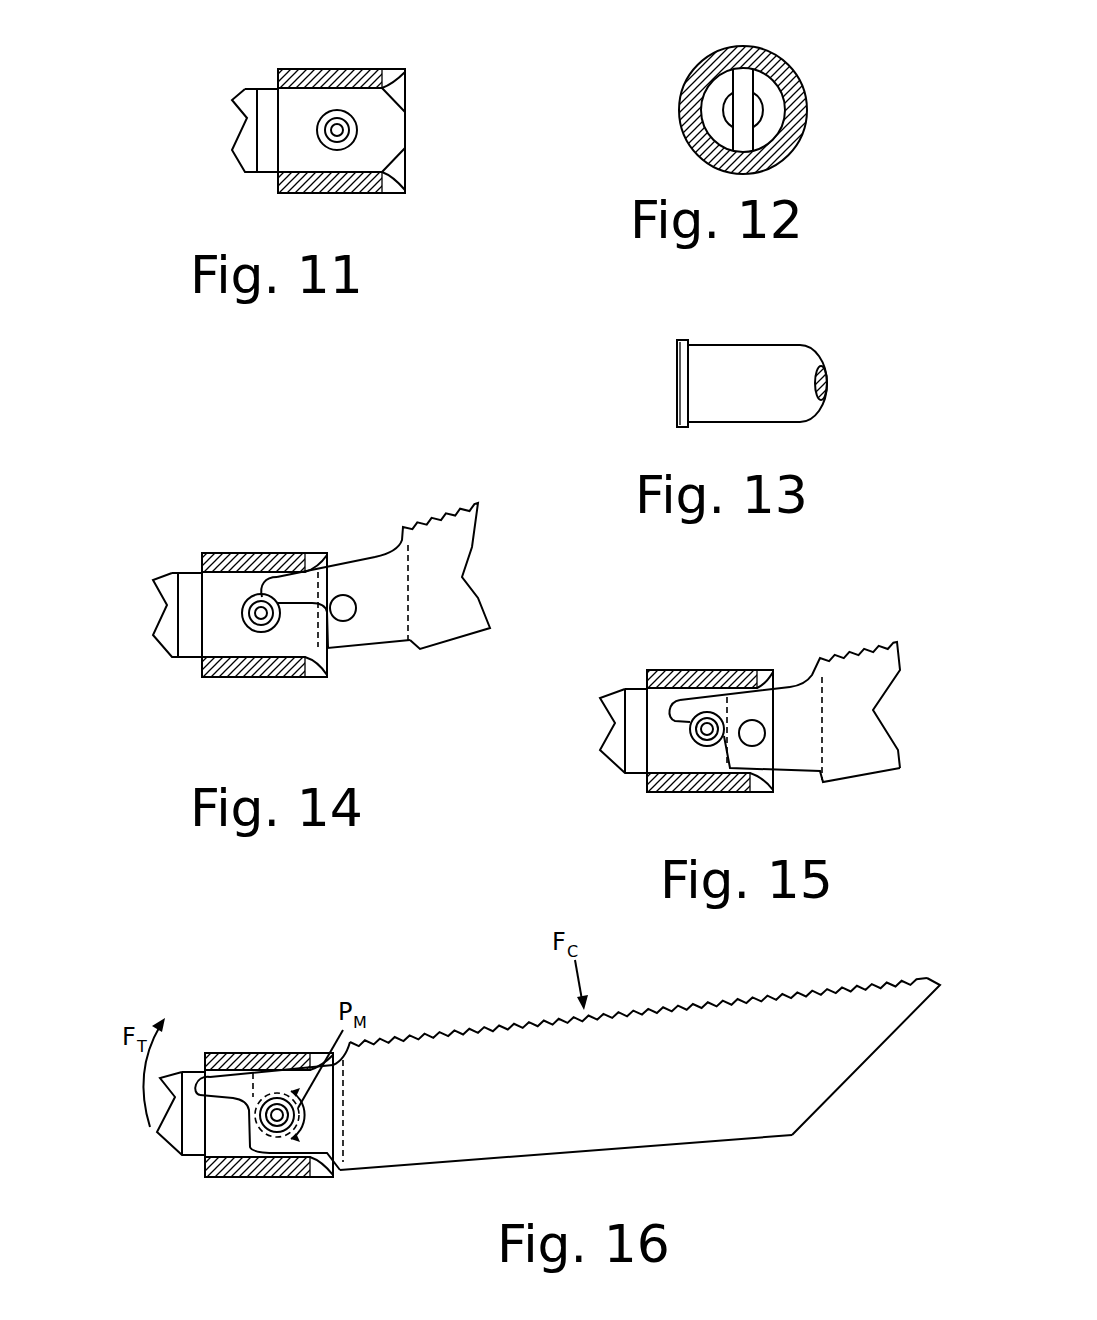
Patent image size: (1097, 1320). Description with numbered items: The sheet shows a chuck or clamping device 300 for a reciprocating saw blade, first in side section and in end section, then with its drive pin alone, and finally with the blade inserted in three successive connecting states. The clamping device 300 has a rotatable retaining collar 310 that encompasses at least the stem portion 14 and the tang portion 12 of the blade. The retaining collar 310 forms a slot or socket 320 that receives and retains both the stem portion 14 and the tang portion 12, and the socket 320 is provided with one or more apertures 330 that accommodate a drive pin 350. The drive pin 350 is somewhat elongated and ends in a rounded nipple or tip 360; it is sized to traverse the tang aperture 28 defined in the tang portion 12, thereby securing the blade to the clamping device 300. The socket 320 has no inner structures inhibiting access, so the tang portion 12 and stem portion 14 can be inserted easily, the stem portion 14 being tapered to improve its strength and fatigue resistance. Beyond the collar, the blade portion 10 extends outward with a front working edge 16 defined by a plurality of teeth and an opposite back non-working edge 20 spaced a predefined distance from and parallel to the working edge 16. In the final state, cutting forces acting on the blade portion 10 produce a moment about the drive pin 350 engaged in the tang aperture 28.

In FIG. 11, the clamping device 300 is at (296, 101).
In FIG. 11, the retaining collar 310 is at (325, 69).
In FIG. 12, the retaining collar 310 is at (710, 60).
In FIG. 14, the retaining collar 310 is at (223, 553).
In FIG. 15, the retaining collar 310 is at (738, 670).
In FIG. 16, the retaining collar 310 is at (237, 1053).
In FIG. 11, the socket 320 is at (330, 115).
In FIG. 12, the socket 320 is at (740, 83).
In FIG. 14, the socket 320 is at (253, 600).
In FIG. 15, the socket 320 is at (690, 770).
In FIG. 16, the socket 320 is at (232, 1113).
In FIG. 11, the aperture 330 is at (353, 144).
In FIG. 14, the aperture 330 is at (243, 621).
In FIG. 16, the aperture 330 is at (270, 1100).
In FIG. 11, the drive pin 350 is at (347, 128).
In FIG. 12, the drive pin 350 is at (743, 110).
In FIG. 13, the drive pin 350 is at (773, 343).
In FIG. 14, the drive pin 350 is at (266, 622).
In FIG. 15, the drive pin 350 is at (707, 727).
In FIG. 16, the drive pin 350 is at (285, 1123).
In FIG. 13, the tip 360 is at (823, 375).
In FIG. 14, the blade portion 10 is at (435, 595).
In FIG. 15, the blade portion 10 is at (843, 722).
In FIG. 16, the blade portion 10 is at (467, 1092).
In FIG. 14, the tang portion 12 is at (367, 620).
In FIG. 15, the tang portion 12 is at (775, 748).
In FIG. 16, the tang portion 12 is at (330, 1115).
In FIG. 14, the stem portion 14 is at (278, 585).
In FIG. 15, the stem portion 14 is at (685, 708).
In FIG. 16, the stem portion 14 is at (210, 1083).
In FIG. 16, the working edge 16 is at (447, 1035).
In FIG. 16, the non-working edge 20 is at (518, 1158).
In FIG. 14, the tang aperture 28 is at (334, 597).
In FIG. 15, the tang aperture 28 is at (752, 740).